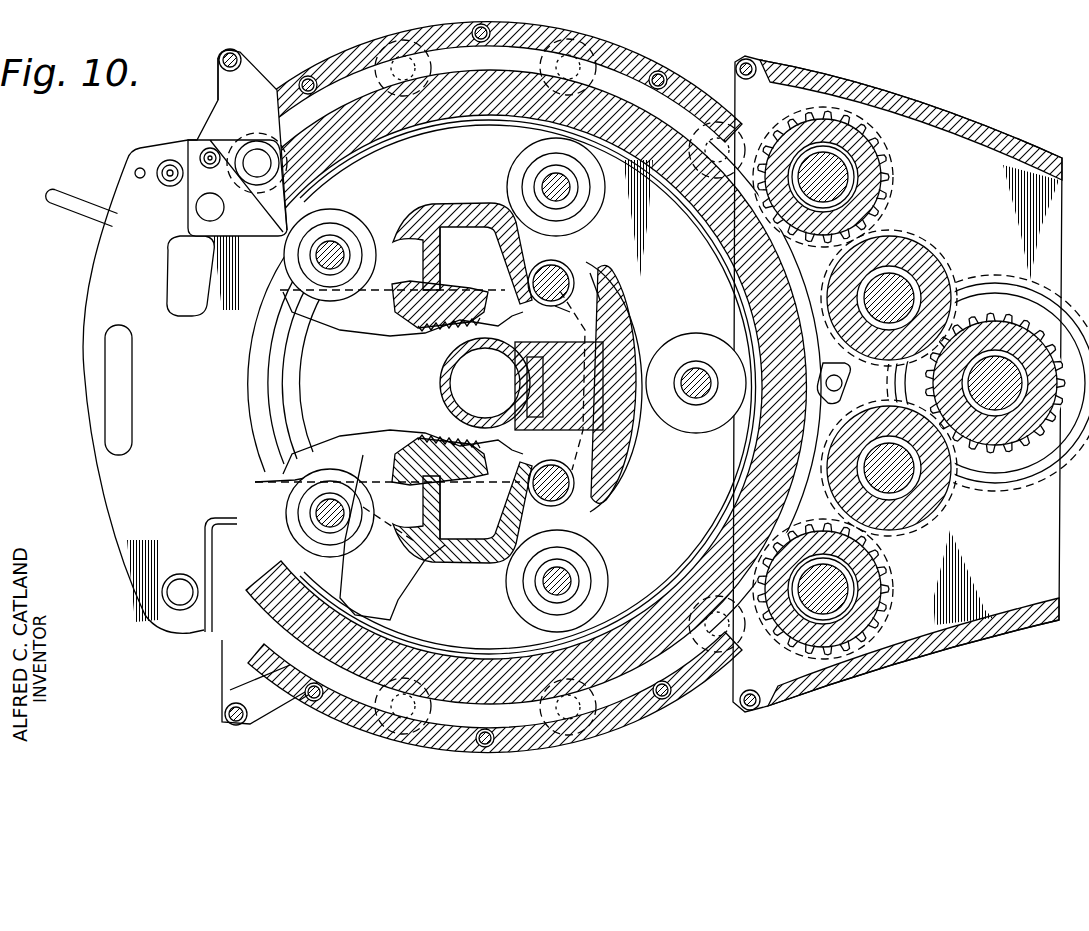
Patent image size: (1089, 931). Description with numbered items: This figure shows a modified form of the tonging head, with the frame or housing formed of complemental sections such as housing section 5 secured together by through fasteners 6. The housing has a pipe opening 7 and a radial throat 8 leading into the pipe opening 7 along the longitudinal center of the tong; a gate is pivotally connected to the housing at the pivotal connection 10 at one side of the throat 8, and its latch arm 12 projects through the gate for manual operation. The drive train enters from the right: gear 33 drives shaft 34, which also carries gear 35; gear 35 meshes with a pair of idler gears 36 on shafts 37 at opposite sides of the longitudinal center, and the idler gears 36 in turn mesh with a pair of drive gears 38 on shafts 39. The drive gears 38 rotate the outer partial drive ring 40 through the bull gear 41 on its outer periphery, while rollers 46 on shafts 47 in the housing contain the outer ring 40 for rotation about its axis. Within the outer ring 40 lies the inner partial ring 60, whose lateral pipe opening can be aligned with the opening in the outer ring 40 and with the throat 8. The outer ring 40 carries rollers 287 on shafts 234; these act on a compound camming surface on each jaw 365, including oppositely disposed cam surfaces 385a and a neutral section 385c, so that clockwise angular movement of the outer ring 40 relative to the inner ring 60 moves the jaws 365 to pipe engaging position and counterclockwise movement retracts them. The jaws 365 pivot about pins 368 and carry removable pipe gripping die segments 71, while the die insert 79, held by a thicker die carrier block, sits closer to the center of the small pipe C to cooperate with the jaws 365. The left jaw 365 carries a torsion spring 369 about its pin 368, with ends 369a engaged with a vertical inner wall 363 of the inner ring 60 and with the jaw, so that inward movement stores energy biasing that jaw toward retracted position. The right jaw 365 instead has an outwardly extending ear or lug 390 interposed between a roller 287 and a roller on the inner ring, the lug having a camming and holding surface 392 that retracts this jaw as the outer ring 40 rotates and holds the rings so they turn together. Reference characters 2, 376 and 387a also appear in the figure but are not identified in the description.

The housing casing 2 is at (938, 113).
The housing section 5 is at (636, 58).
The through fasteners 6 is at (310, 700).
The pipe opening 7 is at (300, 378).
The radial throat 8 is at (272, 480).
The pivotal connection 10 is at (185, 573).
The latch arm 12 is at (66, 212).
The gear 33 is at (998, 478).
The shaft 34 is at (1000, 412).
The gear 35 is at (1003, 300).
The idler gears 36 is at (905, 258).
The shafts 37 is at (910, 282).
The drive gears 38 is at (883, 172).
The shafts 39 is at (835, 175).
The outer partial drive ring 40 is at (308, 210).
The bull gear 41 is at (722, 238).
The rollers 46 is at (580, 48).
The shafts 47 is at (566, 54).
The inner partial ring 60 is at (518, 316).
The pipe gripping die segment 71 is at (438, 326).
The die insert 79 is at (528, 384).
The shafts 234 is at (540, 186).
The rollers 287 is at (515, 165).
The vertical inner wall 363 is at (604, 303).
The jaws 365 is at (393, 306).
The pivot pins 368 is at (562, 270).
The torsion spring 369 is at (574, 282).
The spring ends 369a is at (565, 312).
The hub 376 is at (604, 428).
The cam surfaces 385a is at (512, 210).
The neutral section 385c is at (512, 247).
The pivot line 387a is at (345, 480).
The ear or lug 390 is at (372, 608).
The camming and holding surface 392 is at (362, 560).
The small pipe C is at (445, 389).